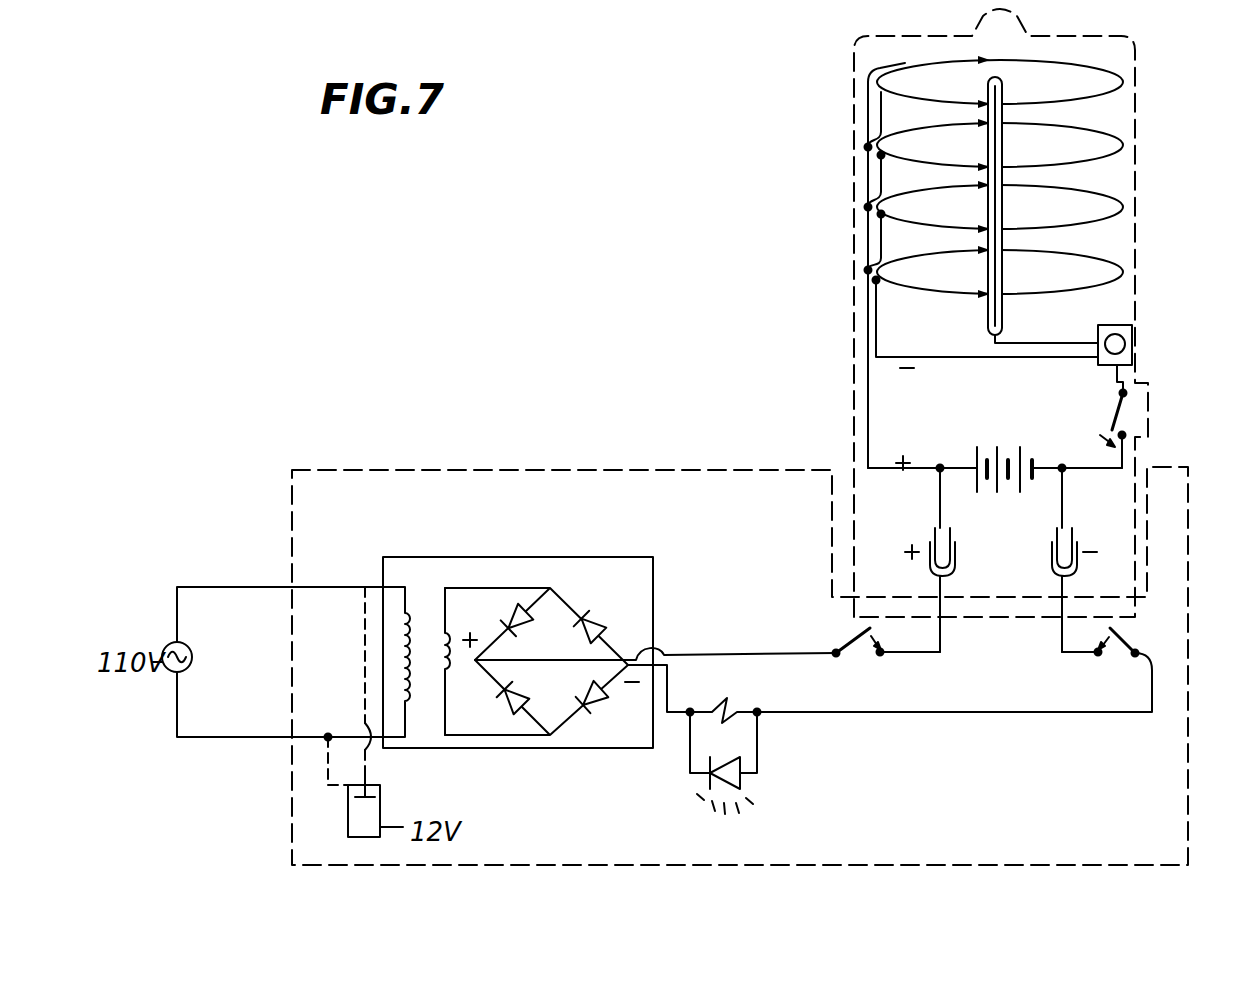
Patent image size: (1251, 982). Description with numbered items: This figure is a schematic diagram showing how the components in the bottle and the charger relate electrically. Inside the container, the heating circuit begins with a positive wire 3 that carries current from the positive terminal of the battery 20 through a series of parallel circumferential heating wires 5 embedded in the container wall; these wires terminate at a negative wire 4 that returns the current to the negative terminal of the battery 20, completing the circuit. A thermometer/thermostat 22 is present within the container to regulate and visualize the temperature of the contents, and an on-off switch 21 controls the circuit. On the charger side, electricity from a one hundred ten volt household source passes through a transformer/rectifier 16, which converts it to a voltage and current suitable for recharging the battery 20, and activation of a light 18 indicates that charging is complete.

The positive wire 3 is at (868, 240).
The negative wire 4 is at (880, 167).
The circumferential heating wires 5 is at (1123, 147).
The transformer/rectifier 16 is at (476, 588).
The light 18 is at (743, 783).
The battery 20 is at (1000, 450).
The on-off switch 21 is at (1123, 393).
The thermometer/thermostat 22 is at (1133, 338).